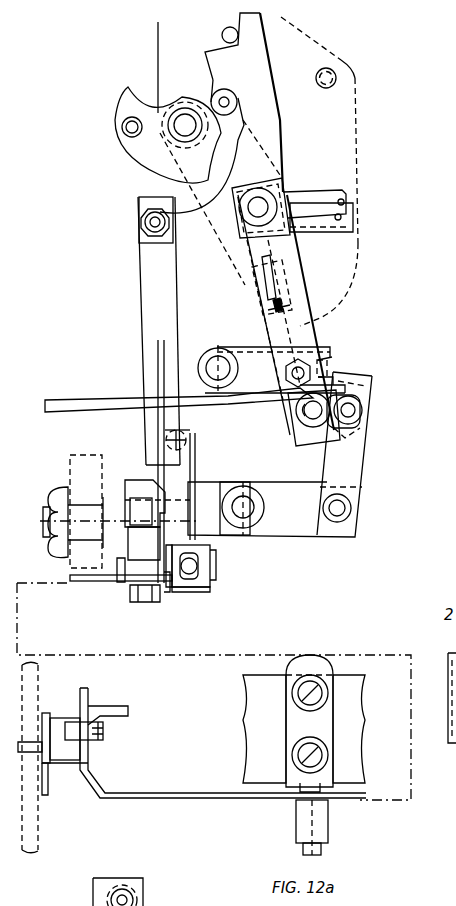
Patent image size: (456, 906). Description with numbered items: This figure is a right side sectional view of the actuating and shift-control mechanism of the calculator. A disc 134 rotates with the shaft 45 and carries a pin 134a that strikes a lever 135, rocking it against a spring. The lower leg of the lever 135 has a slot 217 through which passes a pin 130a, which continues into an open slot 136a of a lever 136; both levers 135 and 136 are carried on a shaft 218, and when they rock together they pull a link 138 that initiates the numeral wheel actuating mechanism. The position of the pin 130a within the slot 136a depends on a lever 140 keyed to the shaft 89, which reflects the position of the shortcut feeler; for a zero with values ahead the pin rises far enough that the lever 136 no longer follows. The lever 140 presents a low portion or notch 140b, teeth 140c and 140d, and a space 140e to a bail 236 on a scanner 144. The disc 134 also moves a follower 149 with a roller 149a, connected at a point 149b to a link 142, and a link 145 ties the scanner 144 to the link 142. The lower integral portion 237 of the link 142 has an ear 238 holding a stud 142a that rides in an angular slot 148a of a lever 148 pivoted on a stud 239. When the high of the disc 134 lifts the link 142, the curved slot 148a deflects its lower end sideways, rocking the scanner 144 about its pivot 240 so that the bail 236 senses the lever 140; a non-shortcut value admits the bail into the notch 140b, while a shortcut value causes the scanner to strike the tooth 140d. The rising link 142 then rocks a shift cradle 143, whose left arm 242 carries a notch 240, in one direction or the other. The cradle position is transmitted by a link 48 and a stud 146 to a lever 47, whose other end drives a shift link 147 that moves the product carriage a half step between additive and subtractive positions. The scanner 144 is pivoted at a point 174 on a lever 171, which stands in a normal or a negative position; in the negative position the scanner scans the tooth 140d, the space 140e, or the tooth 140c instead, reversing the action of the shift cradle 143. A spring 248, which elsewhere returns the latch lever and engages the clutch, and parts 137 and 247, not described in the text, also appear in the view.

The shaft 45 is at (183, 122).
The lever 47 is at (75, 582).
The link 48 is at (121, 582).
The shaft 89 is at (212, 362).
The pin 130a is at (286, 308).
The disc 134 is at (148, 165).
The pin 134a is at (126, 129).
The lever 135 is at (276, 88).
The lever 136 is at (330, 336).
The open slot 136a is at (275, 305).
The pivot pin 137 is at (362, 393).
The link 138 is at (88, 400).
The lever 140 is at (242, 357).
The low portion 140b is at (304, 440).
The tooth 140c is at (333, 350).
The tooth 140d is at (326, 376).
The space 140e is at (332, 362).
The link 142 is at (145, 320).
The stud 142a is at (207, 562).
The shift cradle 143 is at (138, 482).
The scanner 144 is at (348, 472).
The link 145 is at (258, 424).
The stud 146 is at (145, 602).
The shift link 147 is at (45, 712).
The lever 148 is at (197, 467).
The angular slot 148a is at (212, 577).
The follower 149 is at (197, 228).
The roller 149a is at (222, 100).
The connection point 149b is at (150, 226).
The lever 171 is at (295, 525).
The pivot point 174 is at (350, 509).
The slot 217 is at (272, 276).
The shaft 218 is at (262, 207).
The bail 236 is at (372, 373).
The lower integral portion 237 is at (170, 582).
The ear 238 is at (212, 587).
The stud 239 is at (190, 441).
The pivot 240 is at (196, 546).
The left arm 242 is at (118, 490).
The bolt 247 is at (320, 836).
The spring 248 is at (288, 388).